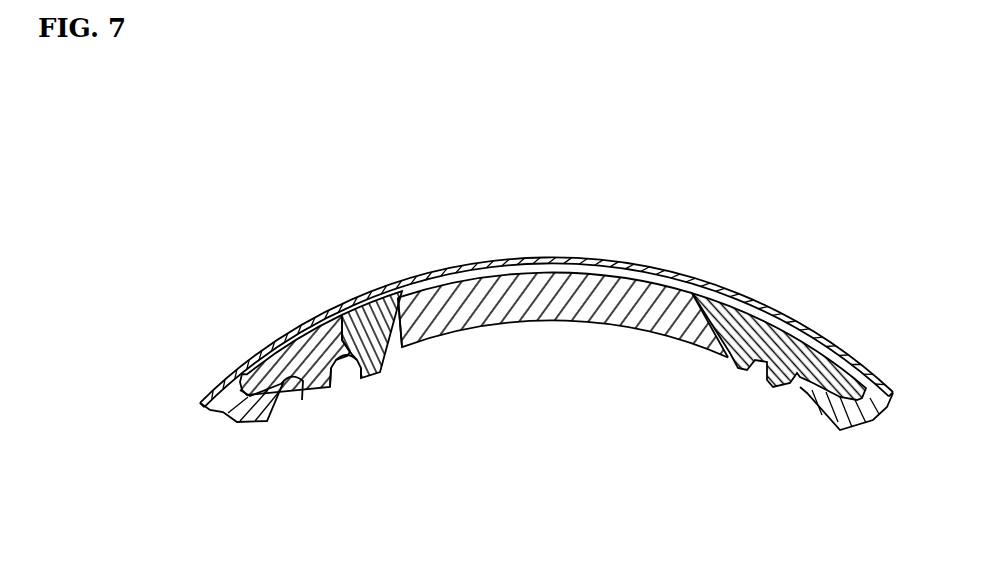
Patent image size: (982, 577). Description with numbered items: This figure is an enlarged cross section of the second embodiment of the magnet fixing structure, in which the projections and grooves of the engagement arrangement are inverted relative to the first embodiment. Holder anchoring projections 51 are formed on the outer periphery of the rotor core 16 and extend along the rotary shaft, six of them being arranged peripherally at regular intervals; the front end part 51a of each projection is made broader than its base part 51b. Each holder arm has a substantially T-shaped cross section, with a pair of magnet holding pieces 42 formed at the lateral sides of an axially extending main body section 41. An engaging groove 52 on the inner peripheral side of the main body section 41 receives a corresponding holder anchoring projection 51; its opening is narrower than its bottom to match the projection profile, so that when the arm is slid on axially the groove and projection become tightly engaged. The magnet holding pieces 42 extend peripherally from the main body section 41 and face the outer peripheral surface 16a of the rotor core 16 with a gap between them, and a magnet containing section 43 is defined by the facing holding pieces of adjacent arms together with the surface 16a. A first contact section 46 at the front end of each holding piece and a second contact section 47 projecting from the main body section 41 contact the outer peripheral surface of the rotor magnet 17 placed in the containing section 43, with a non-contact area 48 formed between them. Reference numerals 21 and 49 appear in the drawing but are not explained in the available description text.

The rotor core 16 is at (508, 357).
The outer peripheral surface 16a is at (640, 330).
The rotor magnet 17 is at (611, 291).
The brake drum 21 is at (731, 292).
The main body section 41 is at (322, 326).
The magnet holding pieces 42 is at (250, 364).
The magnet containing section 43 is at (487, 284).
The first contact section 46 is at (238, 410).
The second contact section 47 is at (301, 400).
The non-contact area 48 is at (272, 420).
The drum inner surface 49 is at (585, 263).
The holder anchoring projections 51 is at (302, 332).
The front end part 51a is at (351, 356).
The base part 51b is at (349, 380).
The engaging groove 52 is at (329, 350).